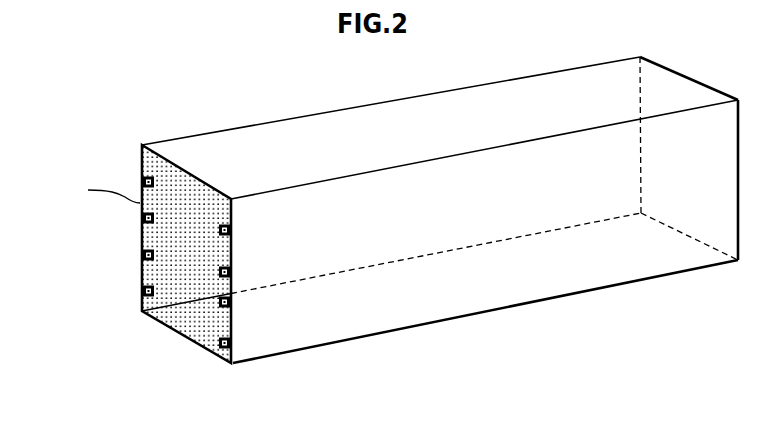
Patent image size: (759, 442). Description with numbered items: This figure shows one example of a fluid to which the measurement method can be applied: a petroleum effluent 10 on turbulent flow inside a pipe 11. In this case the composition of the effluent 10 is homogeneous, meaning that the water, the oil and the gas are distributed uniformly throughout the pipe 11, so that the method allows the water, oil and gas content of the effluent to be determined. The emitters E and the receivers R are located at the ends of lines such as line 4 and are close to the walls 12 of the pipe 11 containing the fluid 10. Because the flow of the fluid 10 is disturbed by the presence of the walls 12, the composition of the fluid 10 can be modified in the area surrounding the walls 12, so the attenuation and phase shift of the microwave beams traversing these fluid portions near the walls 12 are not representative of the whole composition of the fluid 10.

The pipe 11 is at (383, 231).
The walls 12 is at (372, 128).
The petroleum effluent 10 is at (192, 257).
The line 4 is at (190, 288).
The emitters E is at (139, 258).
The receivers R is at (232, 302).